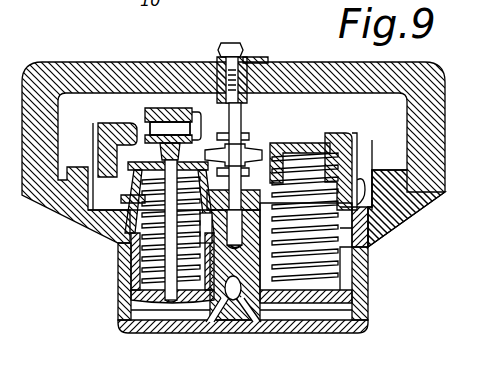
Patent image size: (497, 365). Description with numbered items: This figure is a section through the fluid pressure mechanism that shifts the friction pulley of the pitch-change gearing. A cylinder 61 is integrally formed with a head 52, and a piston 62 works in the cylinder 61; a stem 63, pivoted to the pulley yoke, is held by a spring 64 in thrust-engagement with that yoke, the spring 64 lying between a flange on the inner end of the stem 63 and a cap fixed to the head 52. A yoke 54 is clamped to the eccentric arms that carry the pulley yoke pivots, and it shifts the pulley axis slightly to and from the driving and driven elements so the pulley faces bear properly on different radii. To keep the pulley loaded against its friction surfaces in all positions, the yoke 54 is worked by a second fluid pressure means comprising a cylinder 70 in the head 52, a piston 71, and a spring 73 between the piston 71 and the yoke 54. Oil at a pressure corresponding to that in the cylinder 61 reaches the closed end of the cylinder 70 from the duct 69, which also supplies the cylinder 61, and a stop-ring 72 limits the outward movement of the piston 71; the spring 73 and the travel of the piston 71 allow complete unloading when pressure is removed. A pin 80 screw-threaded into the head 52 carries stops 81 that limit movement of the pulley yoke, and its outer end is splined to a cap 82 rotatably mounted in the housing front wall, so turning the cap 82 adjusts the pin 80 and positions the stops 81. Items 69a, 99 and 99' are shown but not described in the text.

The head 52 is at (120, 320).
The yoke 54 is at (342, 133).
The cylinder 61 is at (127, 233).
The piston 62 is at (117, 285).
The stem 63 is at (140, 250).
The spring 64 is at (132, 220).
The duct 69 is at (233, 300).
The seat ring 69a is at (125, 200).
The cylinder 70 is at (366, 302).
The piston 71 is at (355, 278).
The stop-ring 72 is at (403, 233).
The spring 73 is at (352, 248).
The pin 80 is at (243, 122).
The stops 81 is at (250, 141).
The cap 82 is at (263, 57).
The bobbin 99 is at (157, 170).
The bobbin groove 99' is at (170, 87).